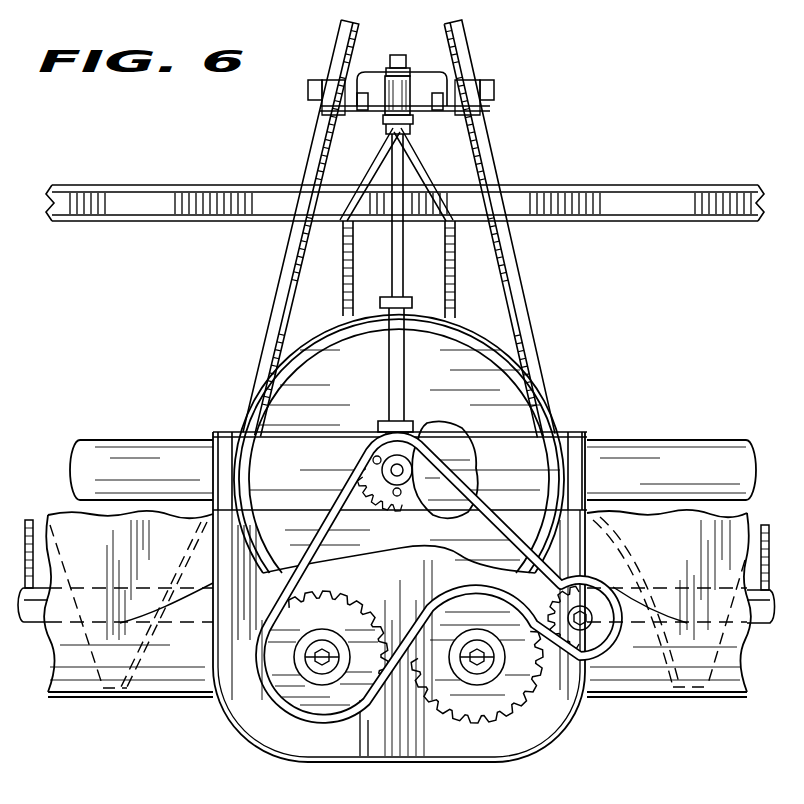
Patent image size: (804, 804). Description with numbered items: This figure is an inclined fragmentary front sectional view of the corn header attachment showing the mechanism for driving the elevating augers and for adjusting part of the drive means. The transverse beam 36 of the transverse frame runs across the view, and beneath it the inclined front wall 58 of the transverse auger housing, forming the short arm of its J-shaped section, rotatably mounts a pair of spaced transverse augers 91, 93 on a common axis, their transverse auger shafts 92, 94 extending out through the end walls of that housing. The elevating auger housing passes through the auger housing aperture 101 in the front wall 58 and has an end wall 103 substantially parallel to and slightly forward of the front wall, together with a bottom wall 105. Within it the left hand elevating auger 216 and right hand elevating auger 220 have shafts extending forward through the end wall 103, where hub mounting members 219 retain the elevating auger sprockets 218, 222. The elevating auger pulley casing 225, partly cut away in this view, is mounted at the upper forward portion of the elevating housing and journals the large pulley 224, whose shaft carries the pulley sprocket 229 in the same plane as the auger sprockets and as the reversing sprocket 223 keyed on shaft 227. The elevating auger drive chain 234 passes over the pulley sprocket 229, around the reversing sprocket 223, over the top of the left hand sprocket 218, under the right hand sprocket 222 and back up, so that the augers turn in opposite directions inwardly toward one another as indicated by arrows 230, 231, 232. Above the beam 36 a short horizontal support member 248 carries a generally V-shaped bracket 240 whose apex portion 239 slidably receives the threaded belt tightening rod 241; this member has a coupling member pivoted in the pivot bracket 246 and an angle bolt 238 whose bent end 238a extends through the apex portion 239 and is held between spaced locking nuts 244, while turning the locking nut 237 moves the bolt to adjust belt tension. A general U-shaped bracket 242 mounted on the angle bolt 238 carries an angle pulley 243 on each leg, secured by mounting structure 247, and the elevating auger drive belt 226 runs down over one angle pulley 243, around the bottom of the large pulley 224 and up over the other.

The transverse beam 36 is at (653, 457).
The inclined front wall 58 is at (733, 647).
The transverse auger 91 is at (750, 527).
The transverse auger shaft 92 is at (762, 623).
The transverse auger 93 is at (29, 520).
The transverse auger shaft 94 is at (33, 617).
The auger housing aperture 101 is at (213, 658).
The end wall 103 is at (413, 753).
The bottom wall 105 is at (377, 760).
The left hand elevating auger 216 is at (453, 753).
The left hand elevating auger sprocket 218 is at (513, 690).
The hub mounting member 219 is at (399, 457).
The right hand elevating auger 220 is at (370, 740).
The right hand elevating auger sprocket 222 is at (347, 621).
The reversing sprocket 223 is at (594, 633).
The large pulley 224 is at (487, 363).
The elevating auger pulley casing 225 is at (507, 452).
The elevating auger drive belt 226 is at (510, 274).
The shaft 227 is at (590, 616).
The pulley sprocket 229 is at (445, 469).
The arrow 230 is at (438, 586).
The arrow 231 is at (385, 601).
The arrow 232 is at (385, 468).
The elevating auger drive chain 234 is at (280, 710).
The locking nut 237 is at (343, 316).
The angle bolt 238 is at (390, 236).
The bent end 238a is at (407, 62).
The apex portion 239 is at (404, 97).
The V-shaped bracket 240 is at (457, 175).
The belt tightening rod 241 is at (406, 275).
The U-shaped bracket 242 is at (440, 74).
The angle pulley 243 is at (494, 100).
The locking nuts 244 is at (396, 54).
The pivot bracket 246 is at (385, 422).
The mounting structure 247 is at (312, 84).
The horizontal support member 248 is at (674, 189).